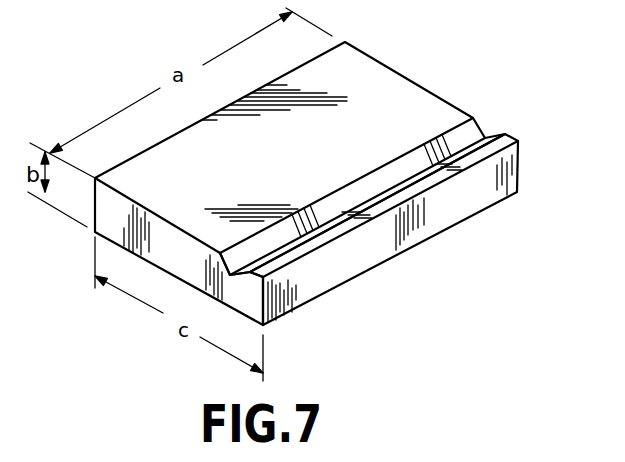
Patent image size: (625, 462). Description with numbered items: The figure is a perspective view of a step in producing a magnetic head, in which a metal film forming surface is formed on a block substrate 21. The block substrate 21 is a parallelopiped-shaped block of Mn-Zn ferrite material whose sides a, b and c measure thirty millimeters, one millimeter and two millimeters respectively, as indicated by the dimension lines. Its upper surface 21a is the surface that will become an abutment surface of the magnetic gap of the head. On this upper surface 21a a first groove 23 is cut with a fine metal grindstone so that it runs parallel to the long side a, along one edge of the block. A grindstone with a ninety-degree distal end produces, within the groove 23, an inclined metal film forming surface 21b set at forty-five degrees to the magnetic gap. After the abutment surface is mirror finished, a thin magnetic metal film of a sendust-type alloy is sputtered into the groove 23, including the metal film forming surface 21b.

The block substrate 21 is at (326, 171).
The upper surface 21a is at (377, 75).
The metal film forming surface 21b is at (486, 140).
The first groove 23 is at (283, 236).